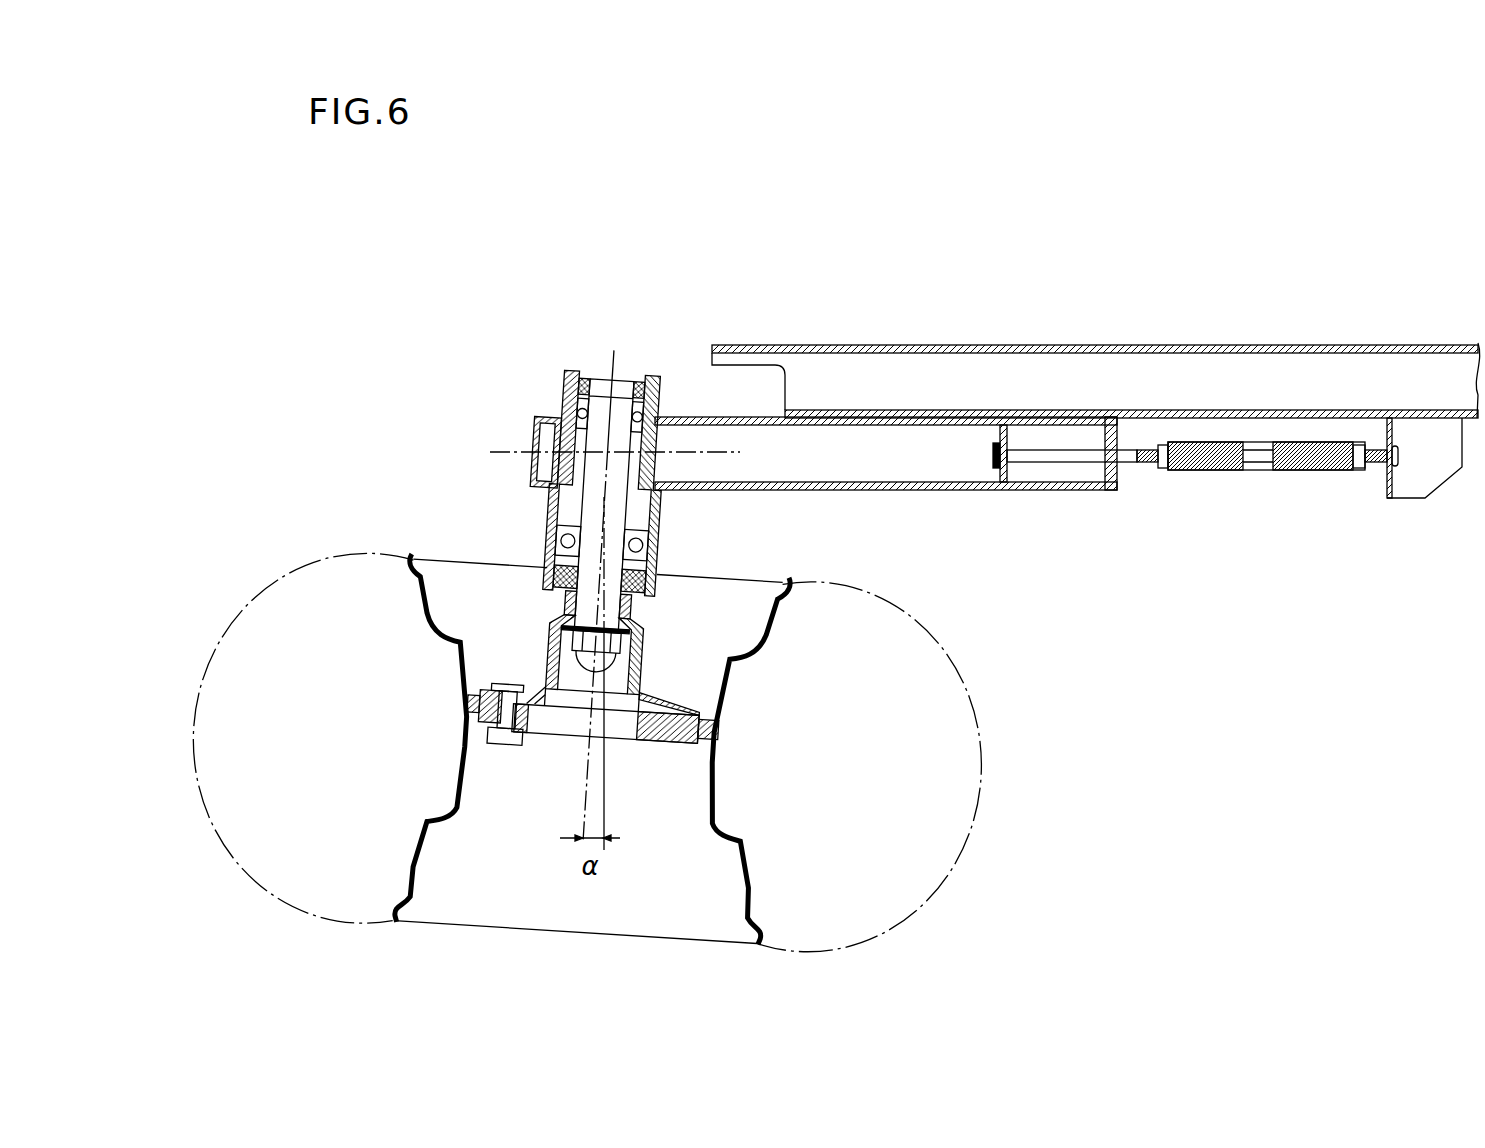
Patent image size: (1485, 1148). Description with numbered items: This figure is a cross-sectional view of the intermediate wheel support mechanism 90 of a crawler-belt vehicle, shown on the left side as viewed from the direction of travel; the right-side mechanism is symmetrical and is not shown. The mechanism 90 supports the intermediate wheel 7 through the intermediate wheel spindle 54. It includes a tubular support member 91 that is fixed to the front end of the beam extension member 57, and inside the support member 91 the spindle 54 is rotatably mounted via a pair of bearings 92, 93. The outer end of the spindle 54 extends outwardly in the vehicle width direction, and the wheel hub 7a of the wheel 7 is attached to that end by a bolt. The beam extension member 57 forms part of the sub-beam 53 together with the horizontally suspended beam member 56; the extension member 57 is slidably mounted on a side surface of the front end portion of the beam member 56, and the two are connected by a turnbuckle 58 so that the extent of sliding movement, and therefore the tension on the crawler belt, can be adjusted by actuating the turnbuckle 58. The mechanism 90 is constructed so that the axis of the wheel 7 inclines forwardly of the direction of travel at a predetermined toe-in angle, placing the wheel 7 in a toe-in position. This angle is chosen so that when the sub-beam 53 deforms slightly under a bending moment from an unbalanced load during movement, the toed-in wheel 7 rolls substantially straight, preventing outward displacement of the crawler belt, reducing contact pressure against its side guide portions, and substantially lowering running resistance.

The intermediate wheel 7 is at (1002, 851).
The wheel hub 7a is at (642, 662).
The sub-beam 53 is at (985, 572).
The intermediate wheel spindle 54 is at (590, 474).
The beam member 56 is at (1428, 421).
The beam extension member 57 is at (970, 490).
The turnbuckle 58 is at (1218, 472).
The intermediate wheel support mechanism 90 is at (657, 360).
The tubular support member 91 is at (573, 375).
The bearing 92 is at (565, 403).
The bearing 93 is at (560, 532).